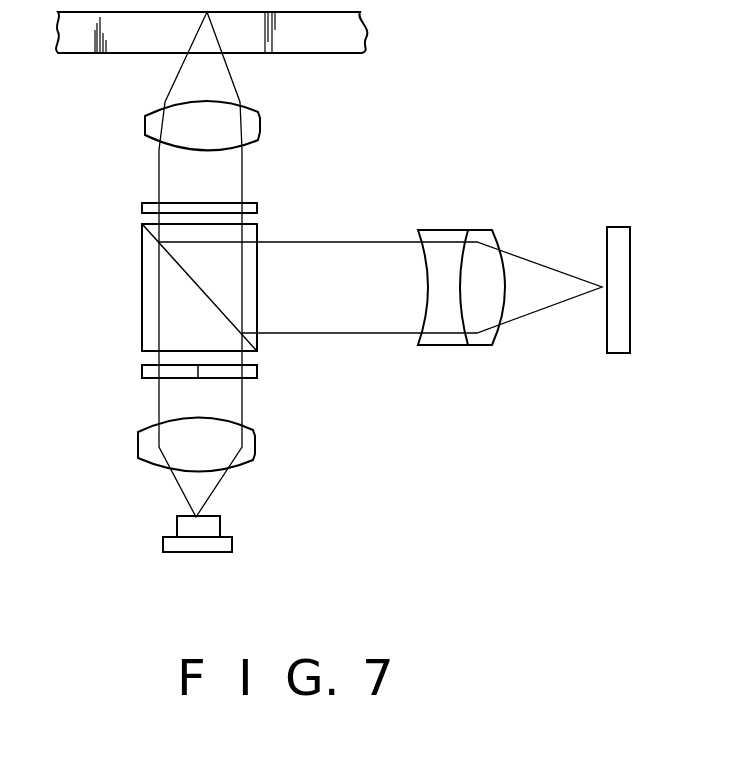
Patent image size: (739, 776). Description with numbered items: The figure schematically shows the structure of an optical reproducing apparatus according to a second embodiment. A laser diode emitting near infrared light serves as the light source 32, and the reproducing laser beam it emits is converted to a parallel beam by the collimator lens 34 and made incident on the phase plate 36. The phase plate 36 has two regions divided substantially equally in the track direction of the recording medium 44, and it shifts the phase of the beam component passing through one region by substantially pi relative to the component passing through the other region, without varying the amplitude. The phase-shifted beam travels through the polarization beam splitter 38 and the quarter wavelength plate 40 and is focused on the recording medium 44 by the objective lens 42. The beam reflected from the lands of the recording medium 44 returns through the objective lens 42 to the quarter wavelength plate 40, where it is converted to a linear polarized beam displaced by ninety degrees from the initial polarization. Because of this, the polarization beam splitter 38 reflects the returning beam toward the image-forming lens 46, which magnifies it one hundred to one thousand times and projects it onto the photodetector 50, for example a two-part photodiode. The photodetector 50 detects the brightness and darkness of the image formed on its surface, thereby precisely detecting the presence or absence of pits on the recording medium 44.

The light source 32 is at (163, 543).
The collimator lens 34 is at (138, 447).
The phase plate 36 is at (142, 373).
The polarization beam splitter 38 is at (142, 297).
The quarter wavelength plate 40 is at (142, 208).
The objective lens 42 is at (148, 125).
The recording medium 44 is at (334, 42).
The image-forming lens 46 is at (468, 228).
The photodetector 50 is at (604, 320).